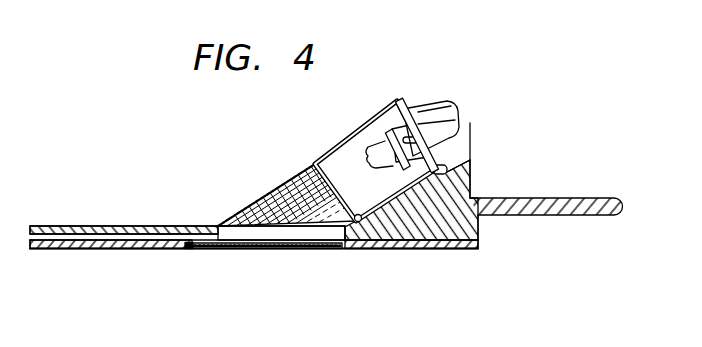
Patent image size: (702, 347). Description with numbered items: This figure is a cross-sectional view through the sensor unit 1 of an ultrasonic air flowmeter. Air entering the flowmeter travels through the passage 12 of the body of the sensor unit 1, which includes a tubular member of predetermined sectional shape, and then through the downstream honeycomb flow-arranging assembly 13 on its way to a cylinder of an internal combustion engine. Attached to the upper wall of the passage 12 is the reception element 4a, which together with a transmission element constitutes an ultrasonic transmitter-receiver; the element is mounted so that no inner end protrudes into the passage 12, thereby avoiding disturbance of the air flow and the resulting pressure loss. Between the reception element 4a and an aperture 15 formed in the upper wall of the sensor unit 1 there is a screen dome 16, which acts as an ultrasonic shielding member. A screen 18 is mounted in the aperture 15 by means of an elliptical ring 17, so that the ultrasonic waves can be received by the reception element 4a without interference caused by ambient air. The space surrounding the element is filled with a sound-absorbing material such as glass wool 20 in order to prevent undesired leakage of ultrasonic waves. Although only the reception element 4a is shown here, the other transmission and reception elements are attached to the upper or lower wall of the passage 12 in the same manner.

The sensor unit 1 is at (93, 226).
The passage 12 is at (150, 226).
The downstream honeycomb flow-arranging assembly 13 is at (568, 198).
The aperture 15 is at (222, 250).
The screen dome 16 is at (280, 187).
The elliptical ring 17 is at (193, 249).
The screen 18 is at (267, 250).
The glass wool 20 is at (388, 250).
The reception element 4a is at (379, 133).